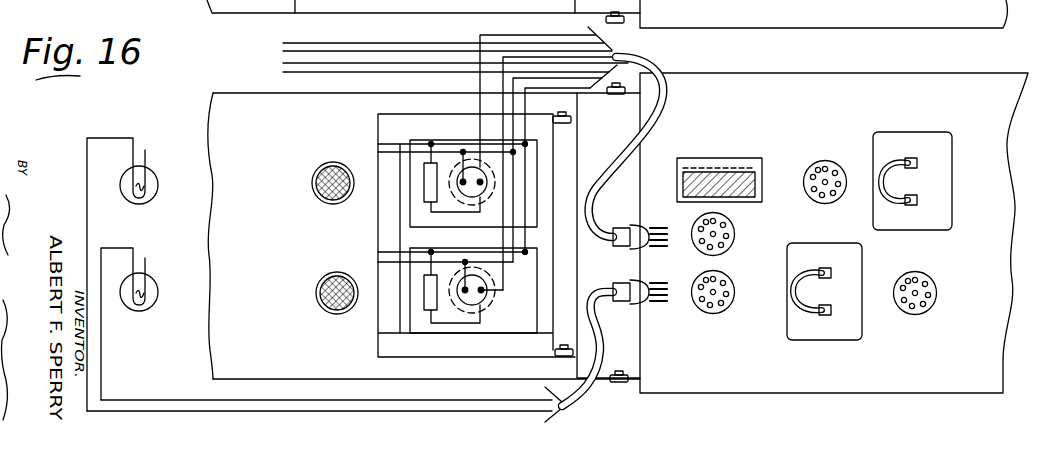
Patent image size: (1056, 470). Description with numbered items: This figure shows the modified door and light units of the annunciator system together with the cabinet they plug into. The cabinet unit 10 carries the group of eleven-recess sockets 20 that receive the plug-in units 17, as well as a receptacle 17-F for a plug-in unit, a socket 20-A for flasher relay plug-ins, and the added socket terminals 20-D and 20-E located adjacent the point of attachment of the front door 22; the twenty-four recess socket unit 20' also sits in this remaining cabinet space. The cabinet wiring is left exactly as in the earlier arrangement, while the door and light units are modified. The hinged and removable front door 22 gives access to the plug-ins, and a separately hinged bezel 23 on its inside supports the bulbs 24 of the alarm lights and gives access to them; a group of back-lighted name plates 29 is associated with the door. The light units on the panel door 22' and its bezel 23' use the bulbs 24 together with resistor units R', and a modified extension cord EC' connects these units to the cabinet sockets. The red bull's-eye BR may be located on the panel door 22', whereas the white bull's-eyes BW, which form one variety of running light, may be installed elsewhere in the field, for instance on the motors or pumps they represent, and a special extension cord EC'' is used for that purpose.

The cabinet unit 10 is at (870, 73).
The plug-in unit 17 is at (905, 230).
The receptacle 17-F is at (813, 340).
The socket 20 is at (917, 304).
The socket unit 20' is at (719, 165).
The socket for flasher relay plug-ins 20-A is at (833, 160).
The socket terminal 20-D is at (728, 219).
The socket terminal 20-E is at (705, 313).
The front door 22 is at (351, 29).
The panel door 22' is at (459, 258).
The bezel 23 is at (296, 24).
The panel 23' is at (471, 271).
The bulb 24 is at (487, 194).
The back-lighted name plate 29 is at (436, 0).
The red bull's-eye BR is at (312, 182).
The white bull's-eye BW is at (158, 186).
The modified extension cord EC' is at (653, 153).
The special extension cord EC'' is at (626, 343).
The resistor unit R' is at (451, 234).